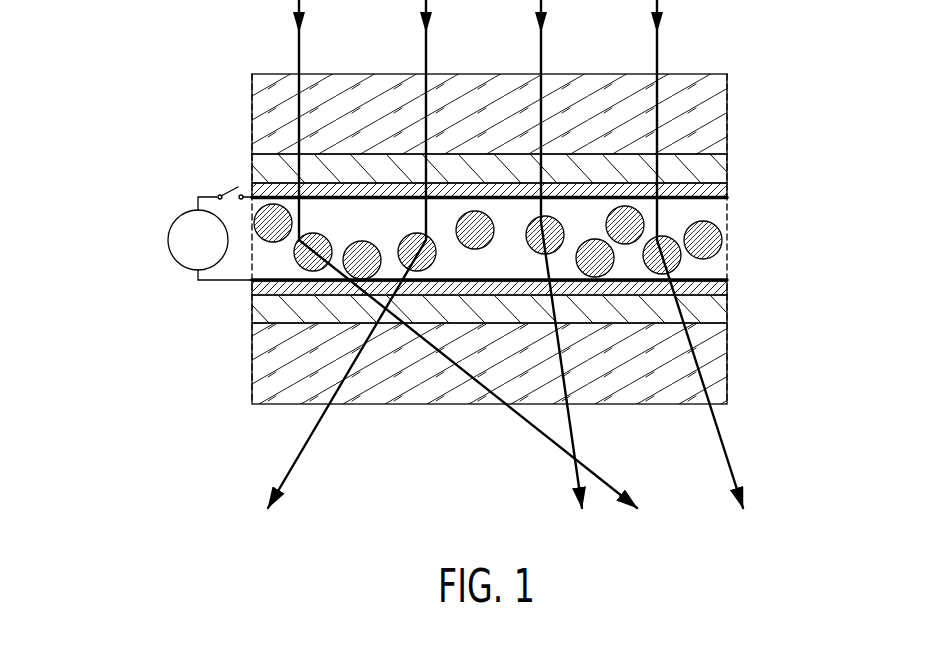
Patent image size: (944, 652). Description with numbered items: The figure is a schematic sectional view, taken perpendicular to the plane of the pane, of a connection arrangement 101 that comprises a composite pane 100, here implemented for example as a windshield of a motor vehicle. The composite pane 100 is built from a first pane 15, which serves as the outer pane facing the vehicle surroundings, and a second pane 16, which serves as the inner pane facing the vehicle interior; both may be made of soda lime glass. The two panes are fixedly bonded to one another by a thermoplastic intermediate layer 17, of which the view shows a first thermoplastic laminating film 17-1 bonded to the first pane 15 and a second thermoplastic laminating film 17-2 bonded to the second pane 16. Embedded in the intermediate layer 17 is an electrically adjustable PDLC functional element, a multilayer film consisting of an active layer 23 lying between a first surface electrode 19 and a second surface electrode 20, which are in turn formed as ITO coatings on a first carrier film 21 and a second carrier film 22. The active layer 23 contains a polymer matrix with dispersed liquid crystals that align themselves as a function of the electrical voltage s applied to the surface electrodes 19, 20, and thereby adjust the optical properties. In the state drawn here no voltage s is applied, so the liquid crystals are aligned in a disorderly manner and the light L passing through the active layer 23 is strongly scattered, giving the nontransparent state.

The first pane 15 is at (720, 115).
The second pane 16 is at (728, 363).
The thermoplastic intermediate layer 17 is at (563, 238).
The first thermoplastic laminating film 17-1 is at (725, 170).
The second thermoplastic laminating film 17-2 is at (728, 310).
The first surface electrode 19 is at (727, 196).
The second surface electrode 20 is at (728, 280).
The first carrier film 21 is at (727, 188).
The second carrier film 22 is at (728, 288).
The active layer 23 is at (728, 238).
The composite pane 100 is at (233, 313).
The connection arrangement 101 is at (168, 82).
The light L is at (298, 55).
The voltage s is at (210, 222).